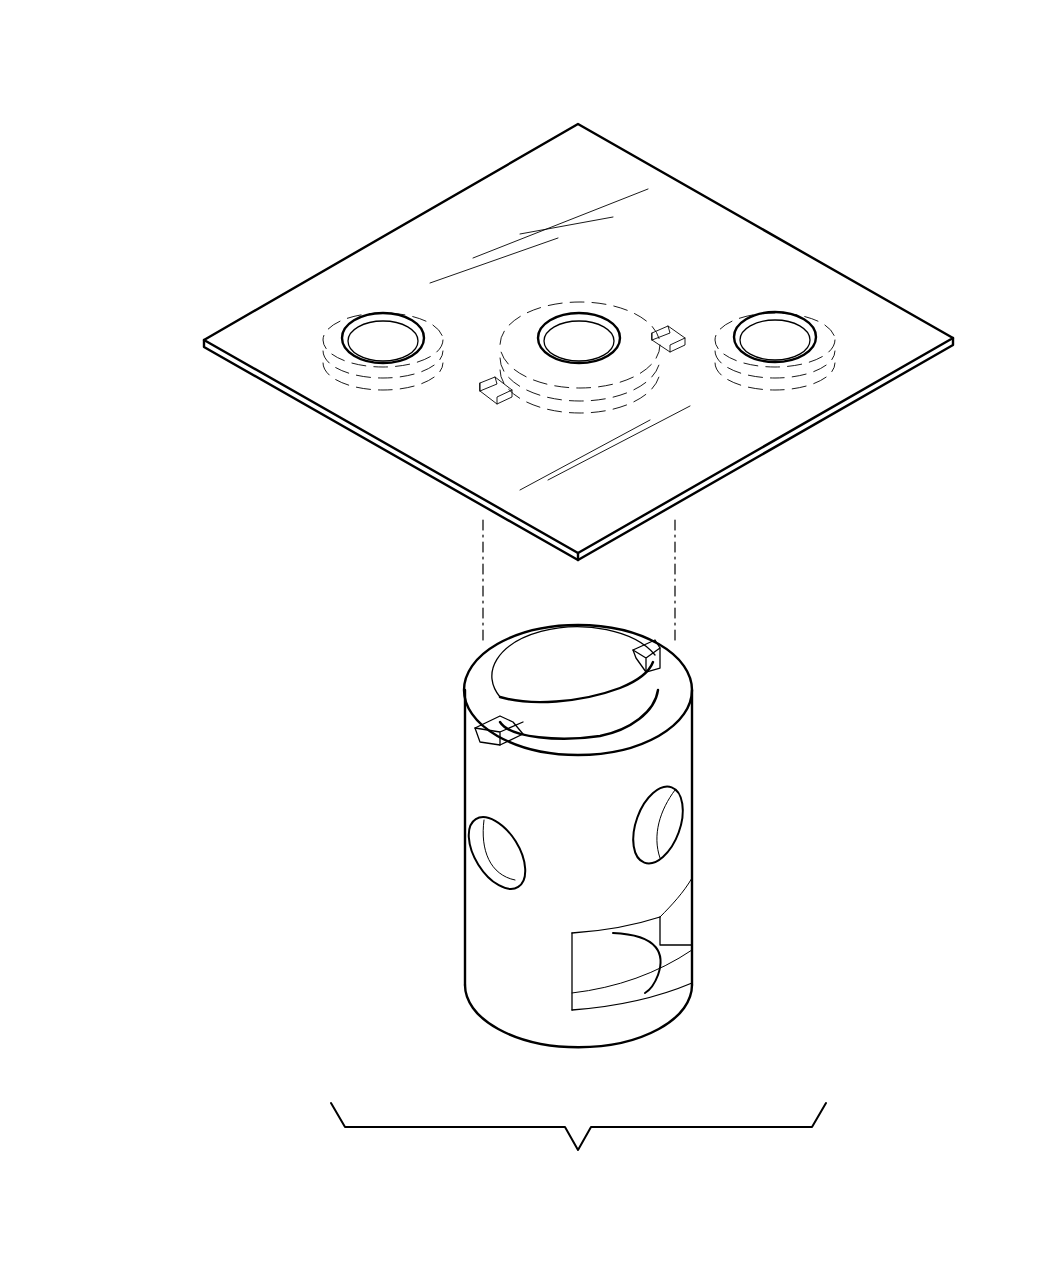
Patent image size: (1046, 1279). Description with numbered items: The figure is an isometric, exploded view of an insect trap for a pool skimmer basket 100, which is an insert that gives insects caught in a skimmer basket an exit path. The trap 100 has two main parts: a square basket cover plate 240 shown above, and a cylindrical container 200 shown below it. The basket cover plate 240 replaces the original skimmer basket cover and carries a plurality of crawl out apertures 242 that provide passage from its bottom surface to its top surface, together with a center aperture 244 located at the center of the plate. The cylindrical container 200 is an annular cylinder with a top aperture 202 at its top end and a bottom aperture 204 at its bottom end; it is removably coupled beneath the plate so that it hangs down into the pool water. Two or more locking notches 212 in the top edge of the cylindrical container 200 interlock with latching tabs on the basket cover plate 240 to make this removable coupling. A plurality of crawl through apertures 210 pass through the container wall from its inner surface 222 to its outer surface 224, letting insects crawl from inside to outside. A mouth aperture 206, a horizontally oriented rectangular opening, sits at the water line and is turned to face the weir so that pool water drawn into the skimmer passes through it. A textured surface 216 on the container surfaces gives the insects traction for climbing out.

The insect trap for a pool skimmer basket 100 is at (717, 110).
The basket cover plate 240 is at (158, 99).
The crawl out apertures 242 is at (404, 321).
The center aperture 244 is at (595, 362).
The cylindrical container 200 is at (243, 653).
The top aperture 202 is at (665, 740).
The inner surface 222 is at (540, 678).
The locking notches 212 is at (500, 697).
The crawl through apertures 210 is at (518, 840).
The outer surface 224 is at (670, 882).
The bottom aperture 204 is at (638, 942).
The mouth aperture 206 is at (573, 972).
The textured surface 216 is at (493, 940).